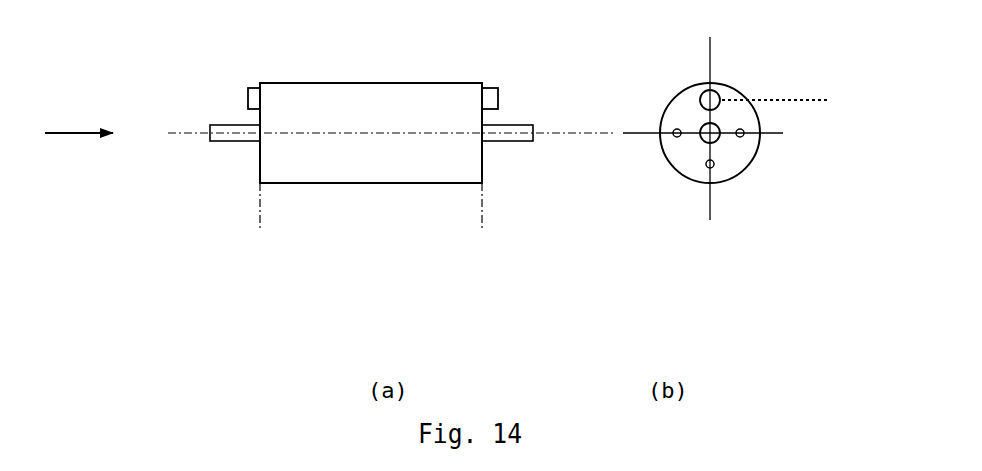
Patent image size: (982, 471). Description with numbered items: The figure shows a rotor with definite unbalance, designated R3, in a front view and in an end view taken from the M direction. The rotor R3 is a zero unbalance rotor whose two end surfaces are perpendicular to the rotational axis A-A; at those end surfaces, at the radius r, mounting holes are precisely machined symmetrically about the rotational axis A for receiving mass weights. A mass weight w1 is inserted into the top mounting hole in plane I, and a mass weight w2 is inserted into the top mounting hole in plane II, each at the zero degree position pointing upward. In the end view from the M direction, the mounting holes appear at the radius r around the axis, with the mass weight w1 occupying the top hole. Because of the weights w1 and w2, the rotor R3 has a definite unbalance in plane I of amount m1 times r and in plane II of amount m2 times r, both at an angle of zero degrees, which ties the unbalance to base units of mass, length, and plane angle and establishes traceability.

The rotor with definite unbalance R3 is at (360, 112).
The mass weight w1 is at (241, 99).
The mass weight w2 is at (506, 93).
The rotational axis A is at (390, 148).
The plane I is at (261, 221).
The plane II is at (478, 223).
The M direction M is at (703, 116).
The radius r is at (777, 101).